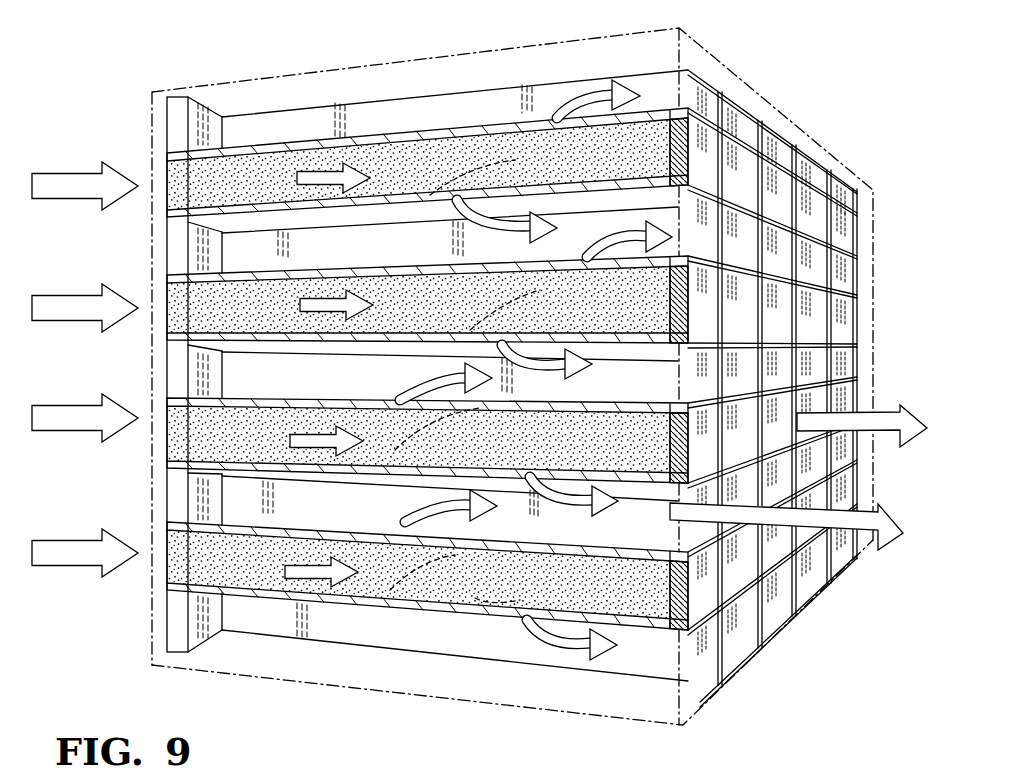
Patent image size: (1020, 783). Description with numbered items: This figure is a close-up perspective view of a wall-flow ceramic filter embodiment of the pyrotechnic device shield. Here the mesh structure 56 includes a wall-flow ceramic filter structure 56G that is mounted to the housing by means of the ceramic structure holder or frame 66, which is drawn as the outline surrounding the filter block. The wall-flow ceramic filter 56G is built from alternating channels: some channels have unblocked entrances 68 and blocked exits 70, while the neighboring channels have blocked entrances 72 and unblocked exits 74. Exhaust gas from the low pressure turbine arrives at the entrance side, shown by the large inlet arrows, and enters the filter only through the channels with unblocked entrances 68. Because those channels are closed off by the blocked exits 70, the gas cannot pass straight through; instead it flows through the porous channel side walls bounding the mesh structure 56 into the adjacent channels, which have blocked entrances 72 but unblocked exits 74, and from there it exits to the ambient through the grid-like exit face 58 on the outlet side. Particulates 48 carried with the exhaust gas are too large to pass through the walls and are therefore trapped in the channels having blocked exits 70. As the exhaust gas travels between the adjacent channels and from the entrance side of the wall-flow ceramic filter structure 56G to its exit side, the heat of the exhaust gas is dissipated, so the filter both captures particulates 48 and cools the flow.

The particulates 48 is at (70, 173).
The mesh structure 56 is at (796, 92).
The wall-flow ceramic filter structure 56G is at (633, 608).
The outlet grid frame 58 is at (803, 325).
The ceramic structure holder or frame 66 is at (388, 694).
The unblocked entrances 68 is at (167, 560).
The blocked exits 70 is at (710, 587).
The blocked entrances 72 is at (180, 497).
The unblocked exits 74 is at (760, 550).